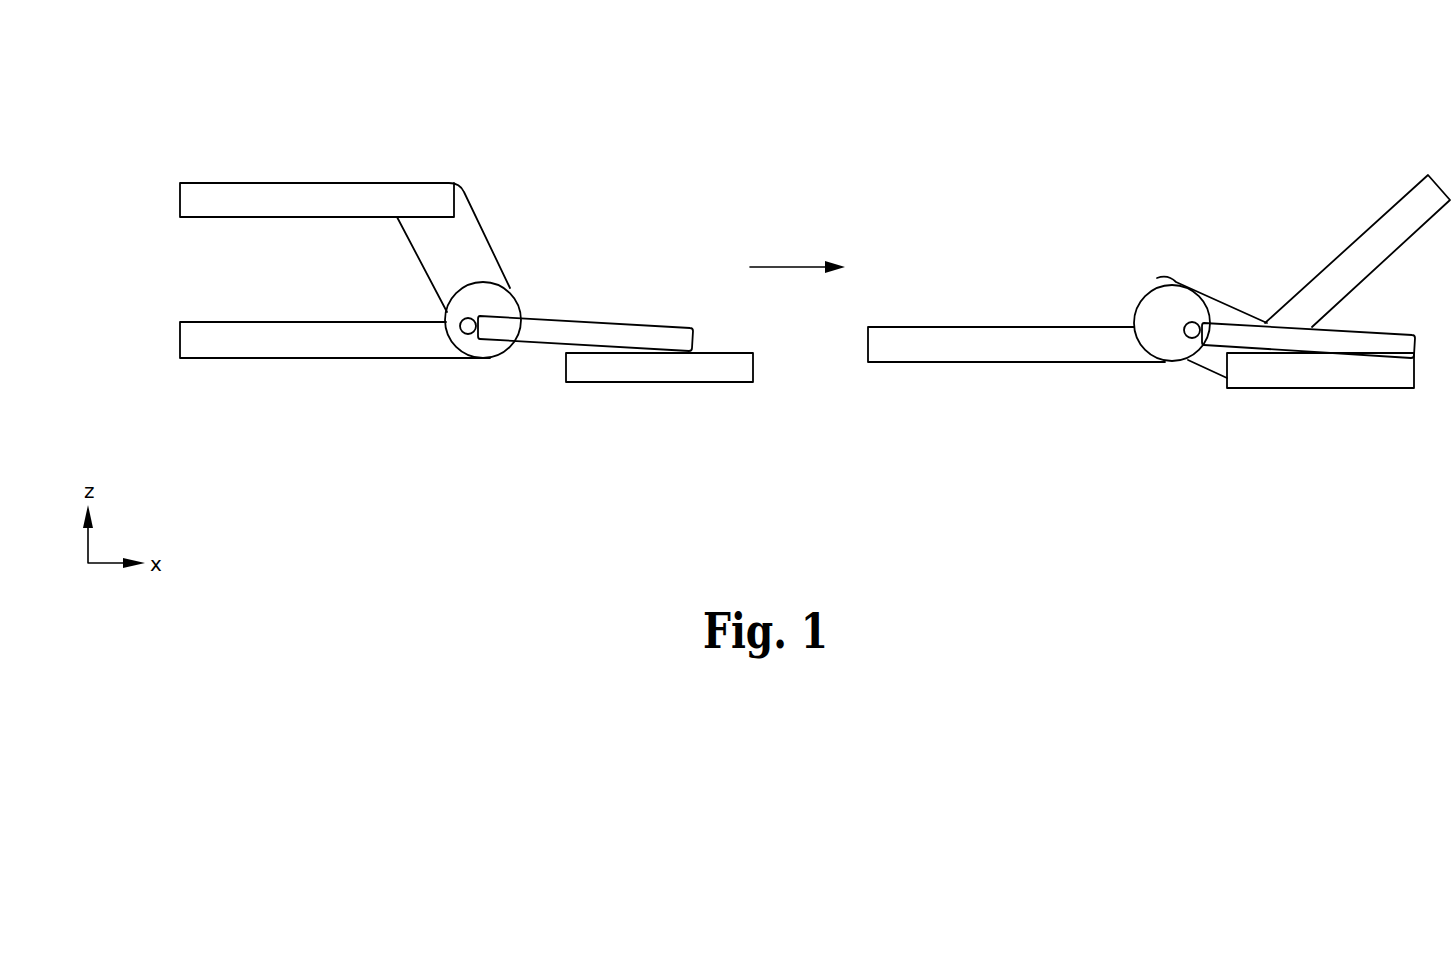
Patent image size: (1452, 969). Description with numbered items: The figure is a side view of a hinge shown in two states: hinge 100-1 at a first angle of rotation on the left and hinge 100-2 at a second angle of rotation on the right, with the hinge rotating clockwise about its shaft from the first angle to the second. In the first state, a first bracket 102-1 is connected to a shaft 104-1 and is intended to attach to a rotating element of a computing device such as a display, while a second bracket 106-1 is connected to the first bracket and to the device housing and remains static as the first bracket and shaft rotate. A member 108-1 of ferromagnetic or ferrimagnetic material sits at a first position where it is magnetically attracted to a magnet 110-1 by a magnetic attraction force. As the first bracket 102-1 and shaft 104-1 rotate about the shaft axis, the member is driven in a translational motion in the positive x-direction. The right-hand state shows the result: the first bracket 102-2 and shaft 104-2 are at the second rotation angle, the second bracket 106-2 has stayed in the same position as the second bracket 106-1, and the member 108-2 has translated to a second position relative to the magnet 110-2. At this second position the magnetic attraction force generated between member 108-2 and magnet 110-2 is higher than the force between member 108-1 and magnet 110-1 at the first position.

The hinge 100-1 is at (196, 128).
The first bracket 102-1 is at (345, 195).
The shaft 104-1 is at (485, 348).
The second bracket 106-1 is at (235, 347).
The member 108-1 is at (588, 320).
The magnet 110-1 is at (640, 368).
The hinge 100-2 is at (971, 128).
The first bracket 102-2 is at (1337, 277).
The shaft 104-2 is at (1153, 317).
The second bracket 106-2 is at (968, 350).
The member 108-2 is at (1253, 342).
The magnet 110-2 is at (1372, 375).